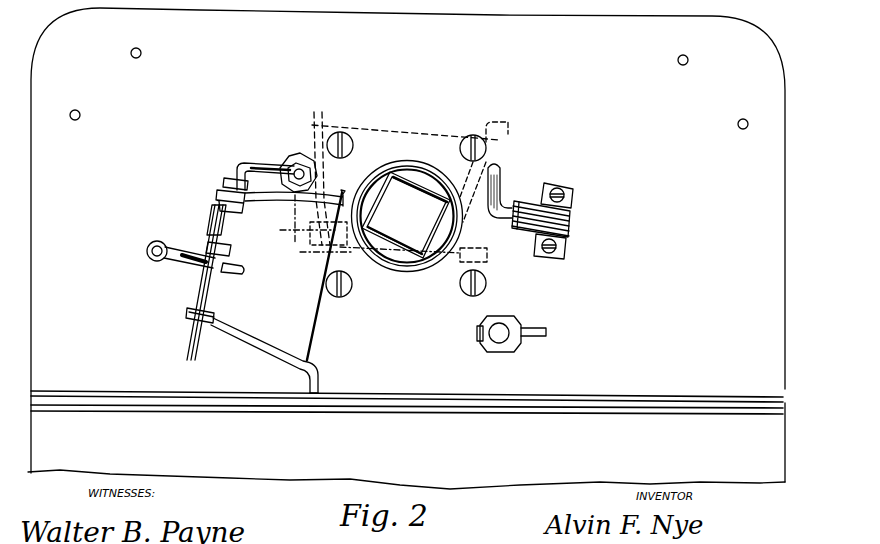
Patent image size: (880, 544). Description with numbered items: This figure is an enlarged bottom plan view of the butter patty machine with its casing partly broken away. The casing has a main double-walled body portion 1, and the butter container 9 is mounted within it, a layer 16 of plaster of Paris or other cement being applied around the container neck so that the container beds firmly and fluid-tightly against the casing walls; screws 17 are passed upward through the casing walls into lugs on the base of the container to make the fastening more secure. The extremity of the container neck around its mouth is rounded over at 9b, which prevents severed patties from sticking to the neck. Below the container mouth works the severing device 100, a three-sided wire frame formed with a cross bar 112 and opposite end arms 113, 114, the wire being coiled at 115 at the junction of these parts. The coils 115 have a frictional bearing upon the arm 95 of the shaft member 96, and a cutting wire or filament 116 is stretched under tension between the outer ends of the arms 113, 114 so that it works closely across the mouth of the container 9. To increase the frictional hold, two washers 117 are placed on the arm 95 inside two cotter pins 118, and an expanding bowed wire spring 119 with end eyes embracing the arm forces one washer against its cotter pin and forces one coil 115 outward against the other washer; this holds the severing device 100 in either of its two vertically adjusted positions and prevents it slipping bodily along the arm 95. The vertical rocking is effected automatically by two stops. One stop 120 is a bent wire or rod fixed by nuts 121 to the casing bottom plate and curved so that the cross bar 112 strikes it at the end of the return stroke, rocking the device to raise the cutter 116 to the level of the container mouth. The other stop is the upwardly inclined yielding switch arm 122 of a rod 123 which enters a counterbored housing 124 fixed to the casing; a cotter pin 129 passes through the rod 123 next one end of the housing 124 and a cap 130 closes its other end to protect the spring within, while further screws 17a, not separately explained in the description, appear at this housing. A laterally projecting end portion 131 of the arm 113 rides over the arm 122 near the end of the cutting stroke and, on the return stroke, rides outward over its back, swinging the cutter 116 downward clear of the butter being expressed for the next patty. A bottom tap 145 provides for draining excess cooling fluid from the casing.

The main double-walled body portion 1 is at (407, 419).
The butter container 9 is at (407, 216).
The rounded-over extremity of container neck 9b is at (418, 187).
The layer of cement 16 is at (406, 161).
The screws 17 is at (352, 138).
The screw 17a is at (580, 217).
The arm 95 is at (272, 166).
The shaft member 96 is at (300, 156).
The severing device 100 is at (370, 201).
The cross bar 112 is at (197, 280).
The end arm 113 is at (247, 343).
The end arm 114 is at (269, 206).
The coils 115 is at (222, 198).
The butter patty cutting wire 116 is at (415, 135).
The washers 117 is at (226, 182).
The cotter pins 118 is at (235, 170).
The expanding bowed wire spring 119 is at (212, 222).
The stop 120 is at (178, 262).
The nuts 121 is at (150, 247).
The yielding switch arm 122 is at (500, 172).
The rod 123 is at (501, 220).
The counterbored housing 124 is at (547, 215).
The cotter pin 129 is at (490, 253).
The cap 130 is at (563, 236).
The laterally projecting end portion 131 is at (322, 381).
The bottom tap 145 is at (500, 340).